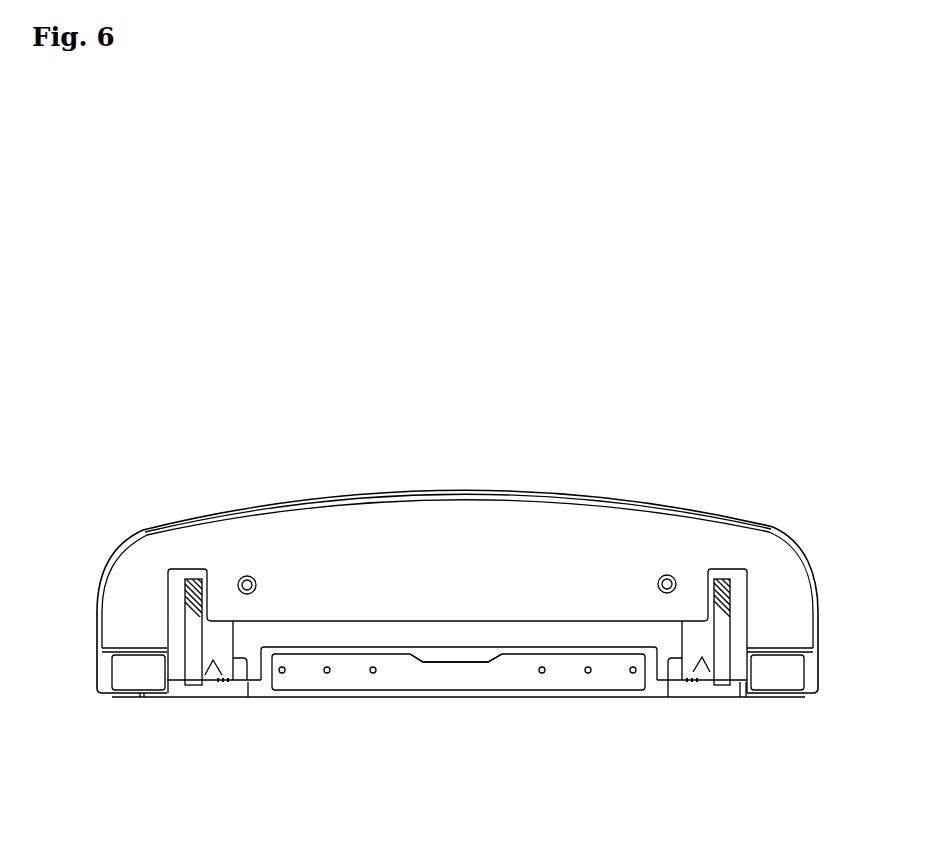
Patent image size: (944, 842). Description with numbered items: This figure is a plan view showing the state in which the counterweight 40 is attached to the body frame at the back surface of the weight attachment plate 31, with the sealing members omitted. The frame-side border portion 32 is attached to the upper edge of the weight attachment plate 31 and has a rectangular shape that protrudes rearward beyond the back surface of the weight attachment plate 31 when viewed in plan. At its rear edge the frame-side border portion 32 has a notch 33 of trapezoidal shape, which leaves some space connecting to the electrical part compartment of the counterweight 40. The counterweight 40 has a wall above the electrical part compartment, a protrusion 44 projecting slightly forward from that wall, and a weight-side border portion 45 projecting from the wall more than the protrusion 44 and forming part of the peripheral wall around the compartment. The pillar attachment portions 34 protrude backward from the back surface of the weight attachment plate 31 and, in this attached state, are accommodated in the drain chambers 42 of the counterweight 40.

The counterweight 40 is at (340, 497).
The protrusion 44 is at (480, 598).
The pillar attachment portions 34 is at (192, 641).
The weight attachment plate 31 is at (266, 690).
The frame-side border portion 32 is at (420, 676).
The notch 33 is at (474, 663).
The weight-side border portion 45 is at (551, 632).
The drain chambers 42 is at (214, 665).